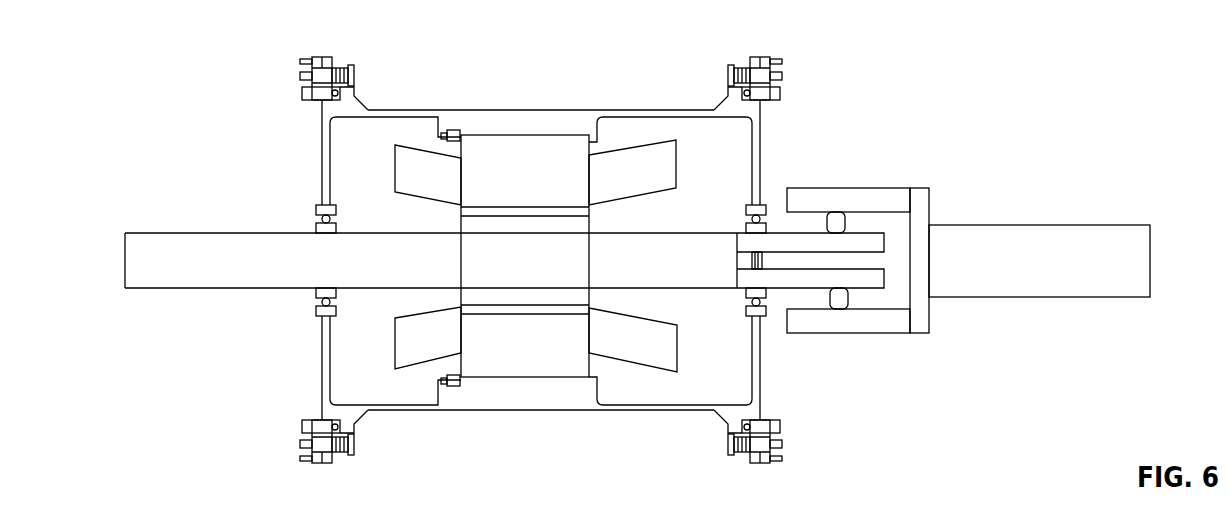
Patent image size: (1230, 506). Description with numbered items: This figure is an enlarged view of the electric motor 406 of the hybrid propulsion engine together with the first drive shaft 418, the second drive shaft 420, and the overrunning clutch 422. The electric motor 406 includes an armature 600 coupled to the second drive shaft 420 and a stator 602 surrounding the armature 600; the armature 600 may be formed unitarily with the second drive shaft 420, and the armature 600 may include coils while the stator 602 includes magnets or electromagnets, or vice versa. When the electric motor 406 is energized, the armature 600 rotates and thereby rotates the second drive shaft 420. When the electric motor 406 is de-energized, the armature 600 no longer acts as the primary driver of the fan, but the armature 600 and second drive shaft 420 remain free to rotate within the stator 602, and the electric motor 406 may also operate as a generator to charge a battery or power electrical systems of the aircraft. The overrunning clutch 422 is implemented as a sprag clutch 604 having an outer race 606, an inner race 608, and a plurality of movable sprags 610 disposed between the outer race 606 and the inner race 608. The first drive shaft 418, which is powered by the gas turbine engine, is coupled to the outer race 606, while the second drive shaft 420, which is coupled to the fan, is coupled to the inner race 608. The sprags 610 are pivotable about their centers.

The electric motor 406 is at (281, 92).
The second drive shaft 420 is at (205, 242).
The stator 602 is at (511, 158).
The armature 600 is at (528, 245).
The overrunning clutch 422 is at (880, 236).
The inner race 608 is at (788, 247).
The outer race 606 is at (823, 188).
The sprag clutch 604 is at (875, 198).
The sprags 610 is at (845, 300).
The first drive shaft 418 is at (1020, 235).